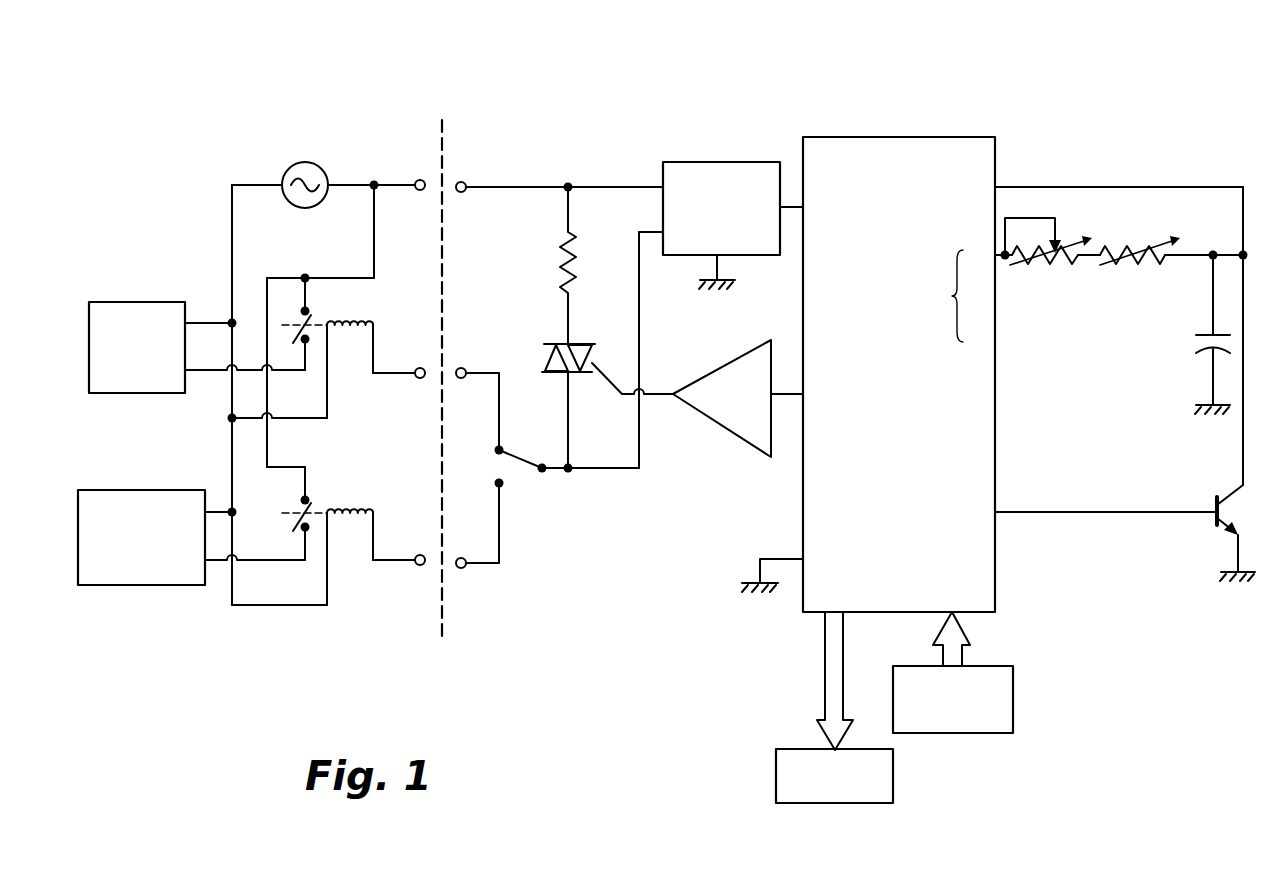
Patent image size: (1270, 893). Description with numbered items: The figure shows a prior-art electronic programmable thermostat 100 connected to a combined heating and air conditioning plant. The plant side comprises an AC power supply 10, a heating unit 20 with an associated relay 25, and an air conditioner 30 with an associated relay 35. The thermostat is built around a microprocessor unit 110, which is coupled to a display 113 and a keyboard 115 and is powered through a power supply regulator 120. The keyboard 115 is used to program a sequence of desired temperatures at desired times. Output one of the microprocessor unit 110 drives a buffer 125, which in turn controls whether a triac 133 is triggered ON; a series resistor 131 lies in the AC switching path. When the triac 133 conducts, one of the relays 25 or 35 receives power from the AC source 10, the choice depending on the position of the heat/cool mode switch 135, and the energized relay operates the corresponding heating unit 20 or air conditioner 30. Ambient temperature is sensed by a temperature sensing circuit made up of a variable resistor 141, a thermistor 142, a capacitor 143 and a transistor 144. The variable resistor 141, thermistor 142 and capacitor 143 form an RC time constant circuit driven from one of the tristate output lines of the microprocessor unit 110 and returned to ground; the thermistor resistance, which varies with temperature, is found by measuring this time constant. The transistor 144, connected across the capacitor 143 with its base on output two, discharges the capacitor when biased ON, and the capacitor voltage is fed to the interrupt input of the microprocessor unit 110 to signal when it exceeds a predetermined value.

The AC power supply 10 is at (310, 163).
The heating unit 20 is at (135, 302).
The relay 25 is at (355, 325).
The air conditioner 30 is at (138, 490).
The relay 35 is at (355, 513).
The electronic programmable thermostat 100 is at (623, 168).
The microprocessor unit 110 is at (845, 137).
The display 113 is at (778, 749).
The keyboard 115 is at (1000, 666).
The power supply regulator 120 is at (700, 162).
The buffer 125 is at (717, 373).
The series resistor 131 is at (560, 267).
The triac 133 is at (545, 360).
The heat/cool mode switch 135 is at (494, 462).
The variable resistor 141 is at (1048, 216).
The thermistor 142 is at (1150, 250).
The capacitor 143 is at (1212, 335).
The transistor 144 is at (1217, 497).